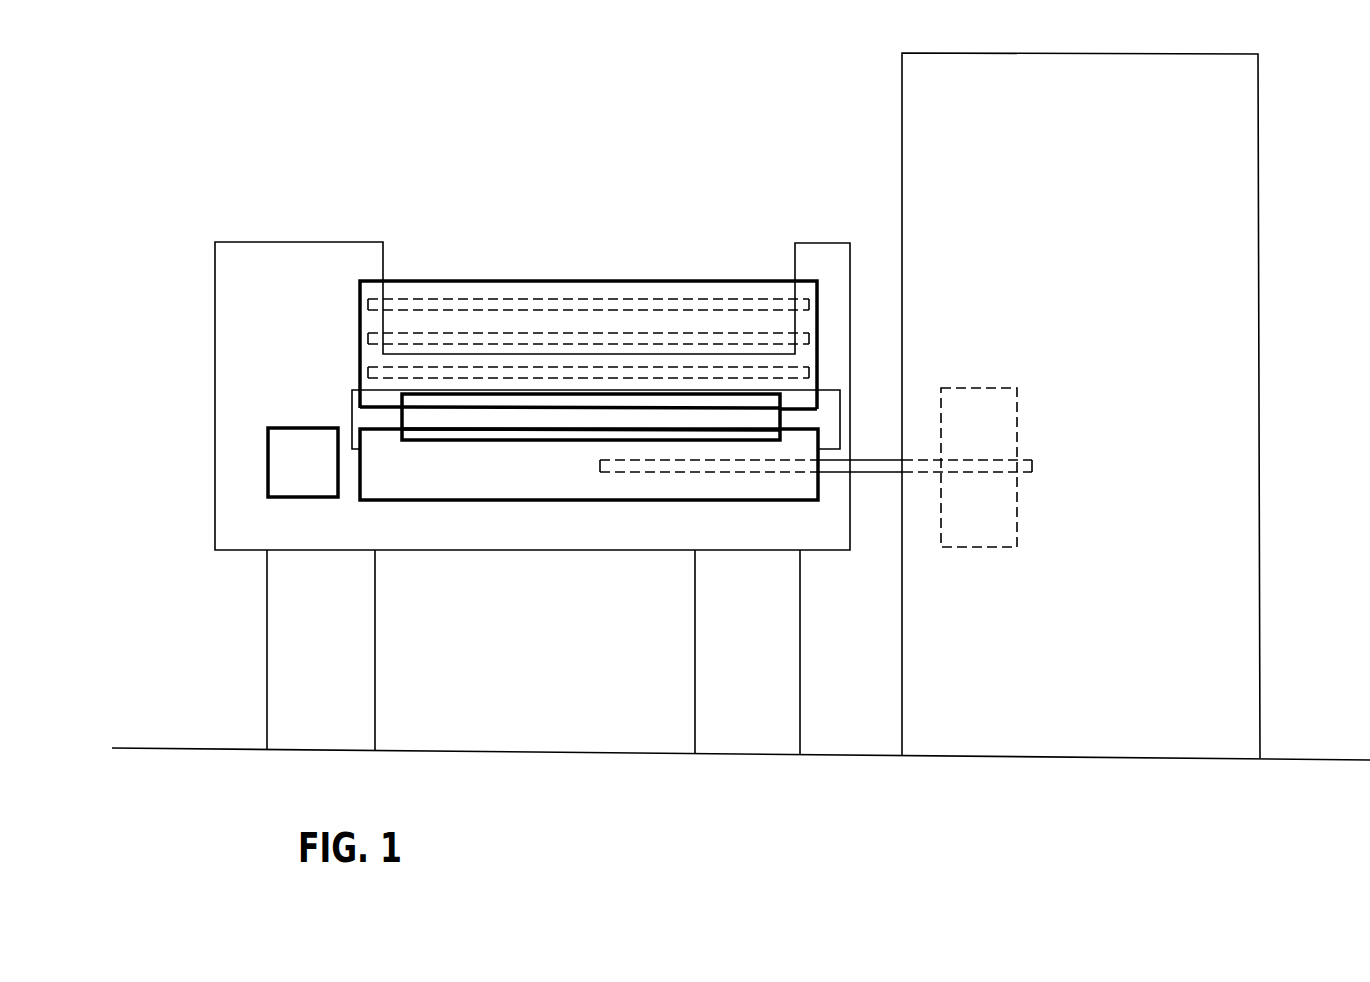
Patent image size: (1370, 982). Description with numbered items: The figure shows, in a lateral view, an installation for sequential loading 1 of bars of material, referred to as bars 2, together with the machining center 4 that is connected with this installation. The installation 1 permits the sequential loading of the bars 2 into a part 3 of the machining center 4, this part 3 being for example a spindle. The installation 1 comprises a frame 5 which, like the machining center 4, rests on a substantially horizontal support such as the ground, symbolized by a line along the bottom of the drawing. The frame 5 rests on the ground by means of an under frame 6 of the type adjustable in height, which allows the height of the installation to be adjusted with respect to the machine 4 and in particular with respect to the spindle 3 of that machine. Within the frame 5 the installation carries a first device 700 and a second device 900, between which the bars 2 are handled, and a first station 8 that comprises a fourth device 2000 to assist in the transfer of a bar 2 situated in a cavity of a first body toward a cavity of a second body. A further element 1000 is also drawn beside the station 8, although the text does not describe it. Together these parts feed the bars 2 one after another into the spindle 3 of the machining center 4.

The installation for sequential loading 1 is at (581, 385).
The bar 2 is at (442, 370).
The part of the machining center 3 is at (983, 547).
The machining center 4 is at (858, 187).
The frame 5 is at (315, 255).
The under frame 6 is at (203, 552).
The first station 8 is at (352, 413).
The first device 700 is at (589, 407).
The second device 900 is at (563, 500).
The control module 1000 is at (268, 457).
The fourth device 2000 is at (402, 433).